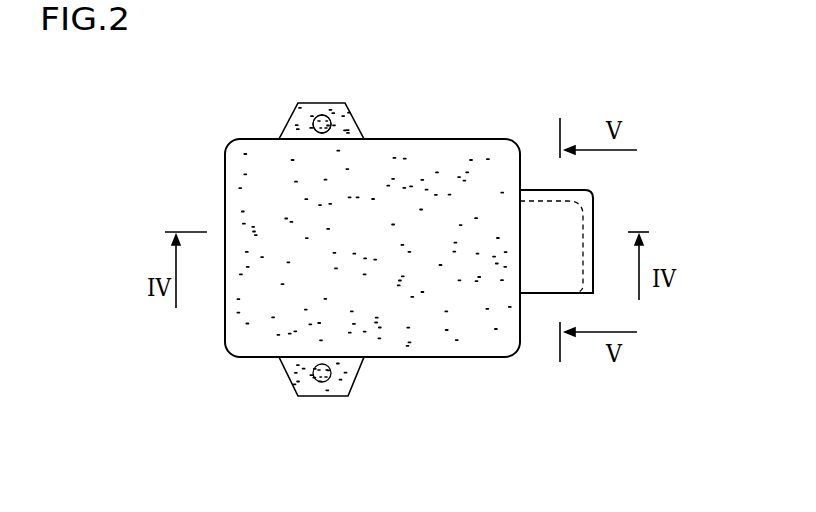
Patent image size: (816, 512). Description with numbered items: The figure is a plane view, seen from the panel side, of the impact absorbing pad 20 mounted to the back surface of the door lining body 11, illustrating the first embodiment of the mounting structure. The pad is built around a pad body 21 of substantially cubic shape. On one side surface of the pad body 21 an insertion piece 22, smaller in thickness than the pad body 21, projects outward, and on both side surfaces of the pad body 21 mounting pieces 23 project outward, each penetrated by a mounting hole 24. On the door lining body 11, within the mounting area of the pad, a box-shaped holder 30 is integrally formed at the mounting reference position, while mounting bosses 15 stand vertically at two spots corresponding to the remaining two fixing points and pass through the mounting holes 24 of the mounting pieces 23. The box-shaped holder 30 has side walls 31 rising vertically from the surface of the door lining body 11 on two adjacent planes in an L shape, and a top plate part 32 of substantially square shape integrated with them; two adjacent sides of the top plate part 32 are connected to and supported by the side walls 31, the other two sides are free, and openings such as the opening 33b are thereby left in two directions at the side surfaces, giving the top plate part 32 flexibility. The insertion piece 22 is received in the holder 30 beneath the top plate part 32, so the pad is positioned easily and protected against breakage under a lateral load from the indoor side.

The door lining body 11 is at (152, 336).
The mounting boss 15 is at (314, 122).
The impact absorbing pad 20 is at (331, 248).
The pad body 21 is at (383, 297).
The insertion piece 22 is at (548, 220).
The mounting piece 23 is at (345, 125).
The mounting hole 24 is at (325, 115).
The box-shaped holder 30 is at (605, 255).
The side wall 31 is at (532, 196).
The top plate part 32 is at (594, 222).
The opening 33b is at (546, 296).